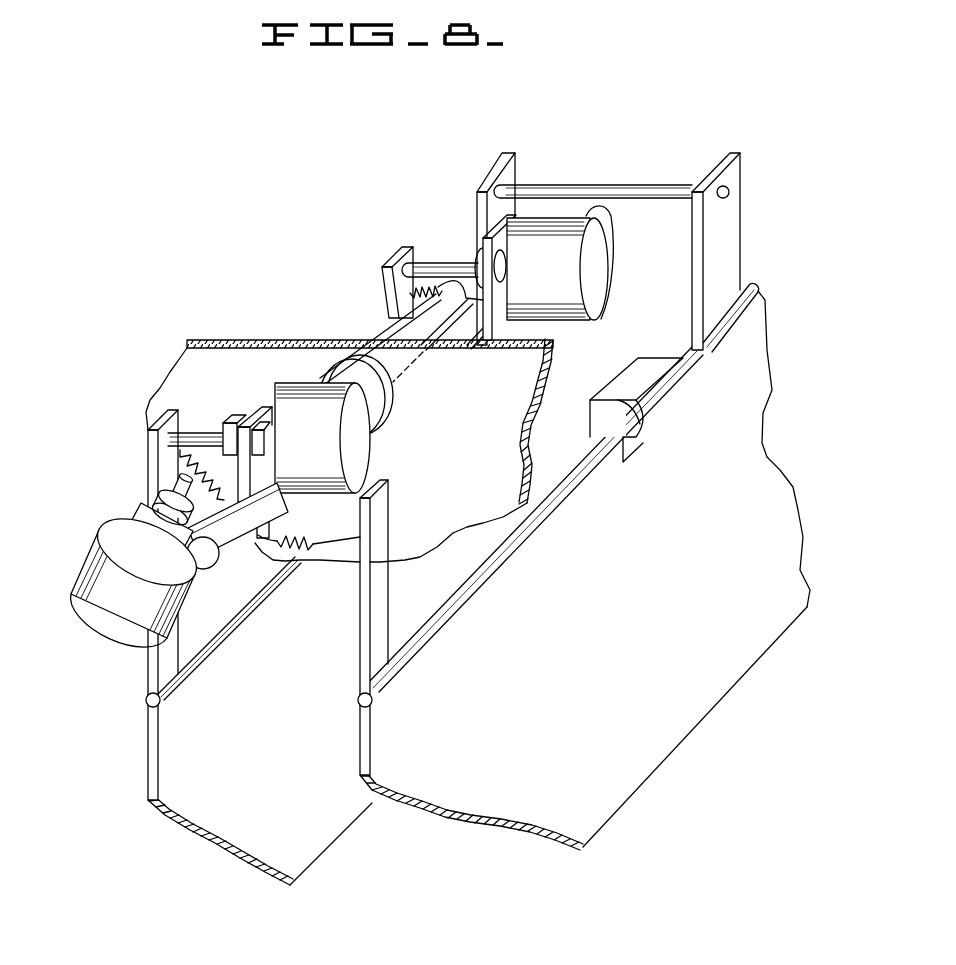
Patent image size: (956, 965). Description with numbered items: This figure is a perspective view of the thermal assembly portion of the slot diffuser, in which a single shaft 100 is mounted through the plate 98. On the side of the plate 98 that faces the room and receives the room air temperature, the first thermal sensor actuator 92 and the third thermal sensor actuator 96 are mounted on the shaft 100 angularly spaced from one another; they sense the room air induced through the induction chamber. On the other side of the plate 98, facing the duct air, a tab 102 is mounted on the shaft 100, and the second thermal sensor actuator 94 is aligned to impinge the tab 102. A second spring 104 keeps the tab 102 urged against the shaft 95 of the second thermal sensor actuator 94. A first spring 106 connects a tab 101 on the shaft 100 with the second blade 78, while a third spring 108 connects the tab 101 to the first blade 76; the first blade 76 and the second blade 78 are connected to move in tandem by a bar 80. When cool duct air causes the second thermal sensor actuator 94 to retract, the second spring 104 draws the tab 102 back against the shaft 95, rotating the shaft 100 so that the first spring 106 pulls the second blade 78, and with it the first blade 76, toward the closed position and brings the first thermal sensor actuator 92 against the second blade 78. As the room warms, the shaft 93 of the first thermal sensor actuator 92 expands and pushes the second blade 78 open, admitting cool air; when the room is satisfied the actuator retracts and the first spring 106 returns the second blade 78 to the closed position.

The first blade 76 is at (477, 202).
The second blade 78 is at (732, 237).
The bar 80 is at (580, 184).
The first thermal sensor actuator 92 is at (167, 612).
The shaft 93 is at (165, 489).
The second thermal sensor actuator 94 is at (592, 312).
The shaft 95 is at (452, 268).
The third thermal sensor actuator 96 is at (360, 455).
The plate 98 is at (476, 407).
The shaft 100 is at (402, 327).
The tab 101 is at (272, 540).
The tab 102 is at (410, 247).
The second spring 104 is at (403, 292).
The first spring 106 is at (303, 547).
The third spring 108 is at (196, 462).